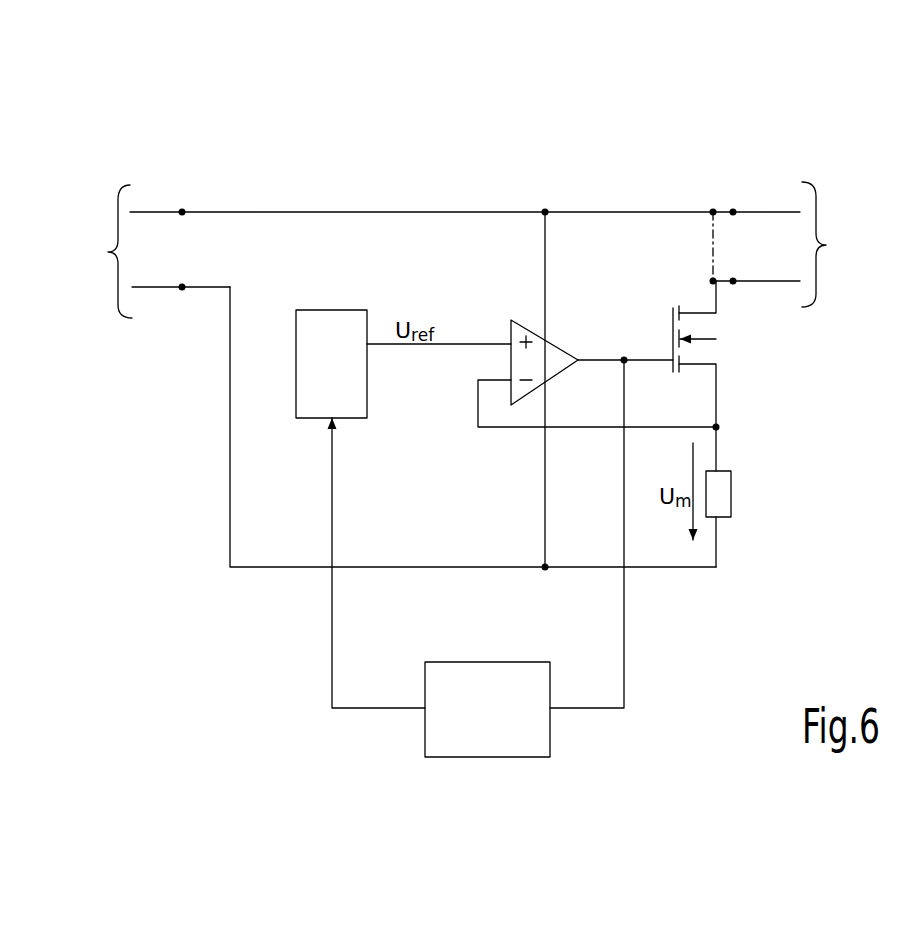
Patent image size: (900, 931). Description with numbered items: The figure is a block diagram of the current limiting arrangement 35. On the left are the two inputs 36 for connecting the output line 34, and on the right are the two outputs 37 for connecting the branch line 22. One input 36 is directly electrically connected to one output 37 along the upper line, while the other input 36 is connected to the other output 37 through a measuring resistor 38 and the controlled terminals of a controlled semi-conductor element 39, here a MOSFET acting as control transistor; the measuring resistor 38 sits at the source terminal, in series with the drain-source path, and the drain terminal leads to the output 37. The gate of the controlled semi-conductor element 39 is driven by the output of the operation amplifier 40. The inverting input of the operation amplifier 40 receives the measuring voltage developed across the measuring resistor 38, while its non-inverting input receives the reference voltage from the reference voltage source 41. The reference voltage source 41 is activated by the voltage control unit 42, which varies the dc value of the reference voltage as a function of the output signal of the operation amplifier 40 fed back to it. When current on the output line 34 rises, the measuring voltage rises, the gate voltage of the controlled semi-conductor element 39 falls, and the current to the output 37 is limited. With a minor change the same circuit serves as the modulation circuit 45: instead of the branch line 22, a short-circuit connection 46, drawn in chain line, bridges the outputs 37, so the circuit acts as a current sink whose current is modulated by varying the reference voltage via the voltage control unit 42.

The branch line 22 is at (784, 244).
The output line 34 is at (152, 251).
The current limiting arrangement 35 is at (742, 130).
The inputs 36 is at (182, 212).
The outputs 37 is at (733, 212).
The measuring resistor 38 is at (731, 492).
The controlled semi-conductor element 39 is at (673, 290).
The operation amplifier 40 is at (511, 318).
The reference voltage source 41 is at (323, 310).
The voltage control unit 42 is at (480, 757).
The modulation circuit 45 is at (583, 117).
The short-circuit connection 46 is at (703, 250).